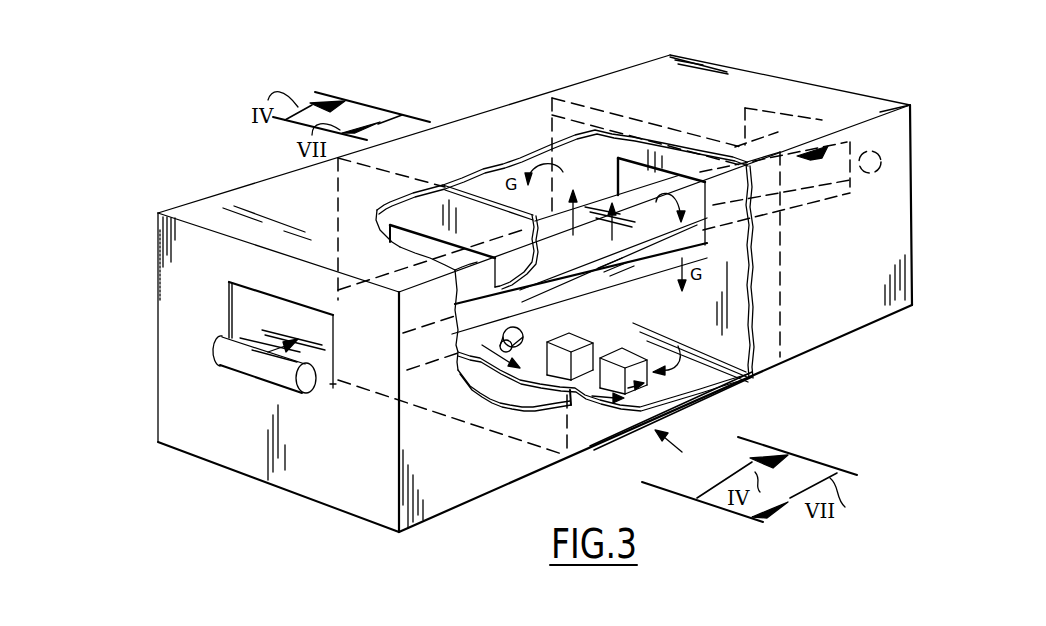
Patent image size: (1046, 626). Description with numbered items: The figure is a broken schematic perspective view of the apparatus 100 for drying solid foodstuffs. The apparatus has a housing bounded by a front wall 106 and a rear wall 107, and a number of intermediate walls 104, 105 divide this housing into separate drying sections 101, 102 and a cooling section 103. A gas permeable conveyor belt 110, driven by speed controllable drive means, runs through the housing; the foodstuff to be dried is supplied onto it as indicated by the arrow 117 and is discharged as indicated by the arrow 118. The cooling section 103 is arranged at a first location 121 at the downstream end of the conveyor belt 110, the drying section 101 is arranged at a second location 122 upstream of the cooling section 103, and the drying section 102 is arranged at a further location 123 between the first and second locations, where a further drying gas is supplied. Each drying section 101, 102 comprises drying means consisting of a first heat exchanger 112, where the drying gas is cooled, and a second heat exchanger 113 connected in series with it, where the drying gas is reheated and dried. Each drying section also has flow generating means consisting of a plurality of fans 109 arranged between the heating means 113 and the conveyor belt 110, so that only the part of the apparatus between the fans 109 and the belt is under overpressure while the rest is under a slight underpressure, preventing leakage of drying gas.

The apparatus 100 is at (685, 451).
The drying section 101 is at (820, 320).
The drying section 102 is at (502, 123).
The cooling section 103 is at (272, 192).
The intermediate wall 104 is at (733, 317).
The intermediate wall 105 is at (547, 397).
The front wall 106 is at (377, 503).
The rear wall 107 is at (912, 110).
The fan 109 is at (522, 340).
The gas permeable conveyor belt 110 is at (257, 338).
The first heat exchanger 112 is at (612, 356).
The second heat exchanger 113 is at (597, 320).
The arrow 117 is at (807, 145).
The arrow 118 is at (282, 340).
The first location 121 is at (277, 334).
The second location 122 is at (777, 138).
The further location 123 is at (583, 242).